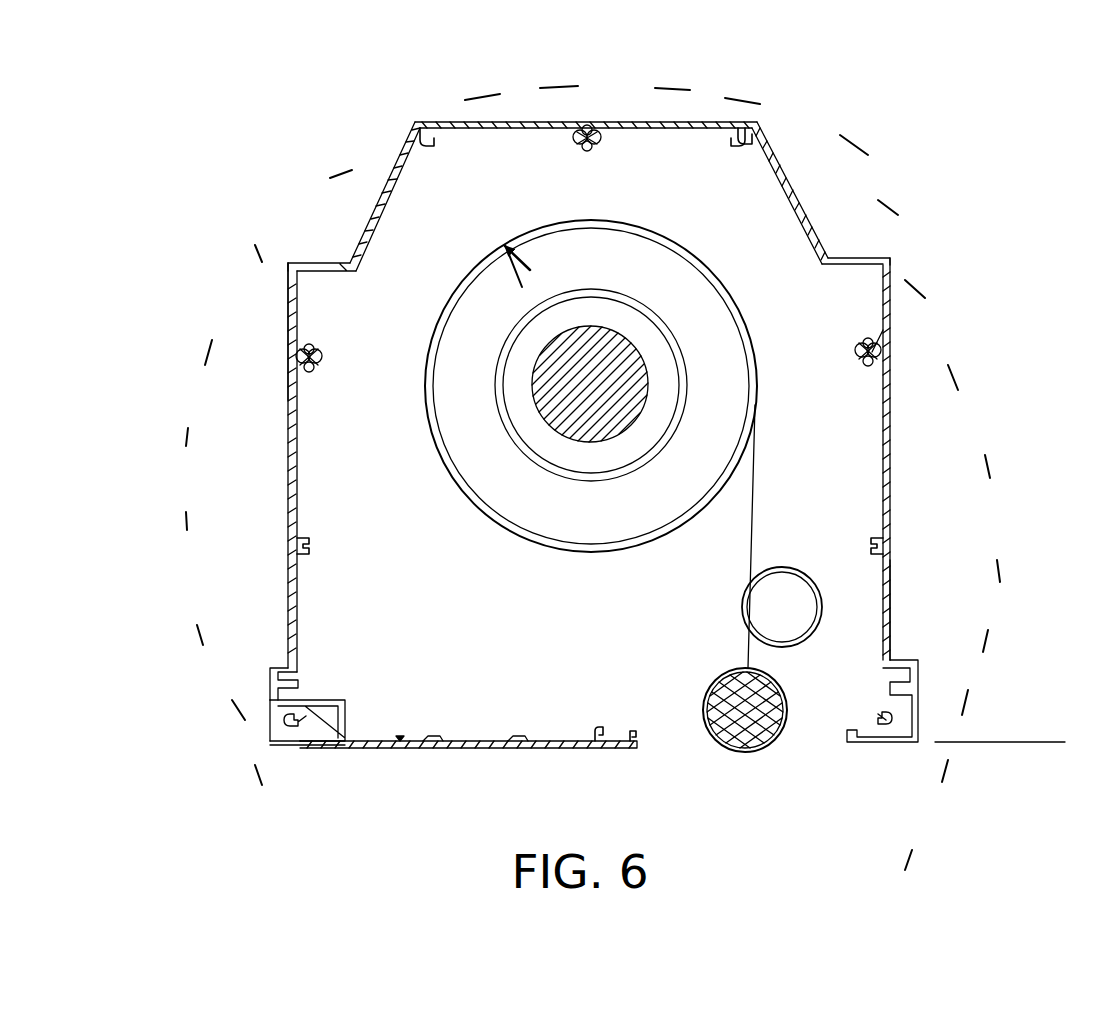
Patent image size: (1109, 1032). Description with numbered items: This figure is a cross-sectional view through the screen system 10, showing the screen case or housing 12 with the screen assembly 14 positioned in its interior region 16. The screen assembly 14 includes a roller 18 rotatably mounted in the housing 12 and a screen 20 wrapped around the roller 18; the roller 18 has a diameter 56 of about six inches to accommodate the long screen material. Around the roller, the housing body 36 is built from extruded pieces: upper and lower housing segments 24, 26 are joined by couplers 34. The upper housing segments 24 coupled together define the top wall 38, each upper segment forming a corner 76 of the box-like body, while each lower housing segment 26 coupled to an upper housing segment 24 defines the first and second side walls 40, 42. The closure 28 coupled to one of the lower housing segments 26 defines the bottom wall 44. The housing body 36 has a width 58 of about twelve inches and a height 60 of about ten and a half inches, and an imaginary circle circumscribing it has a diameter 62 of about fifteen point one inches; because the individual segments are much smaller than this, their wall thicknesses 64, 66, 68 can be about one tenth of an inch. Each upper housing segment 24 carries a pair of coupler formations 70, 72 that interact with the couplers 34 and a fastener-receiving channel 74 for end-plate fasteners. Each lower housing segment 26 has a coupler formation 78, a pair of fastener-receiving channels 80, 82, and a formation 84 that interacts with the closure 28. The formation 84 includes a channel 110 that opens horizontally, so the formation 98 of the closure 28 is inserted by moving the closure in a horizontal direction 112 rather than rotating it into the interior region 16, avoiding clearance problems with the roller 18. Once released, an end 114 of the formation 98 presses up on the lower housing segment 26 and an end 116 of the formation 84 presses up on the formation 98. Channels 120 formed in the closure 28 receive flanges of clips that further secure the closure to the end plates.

The screen system 10 is at (915, 160).
The screen case or housing 12 is at (903, 432).
The screen assembly 14 is at (525, 595).
The interior region 16 is at (862, 302).
The roller 18 is at (700, 542).
The screen 20 is at (540, 552).
The upper housing segments 24 is at (390, 195).
The lower housing segments 26 is at (892, 492).
The closure 28 is at (492, 748).
The couplers 34 is at (880, 355).
The housing body 36 is at (808, 185).
The top wall 38 is at (668, 122).
The first side wall 40 is at (300, 462).
The second side wall 42 is at (893, 600).
The bottom wall 44 is at (540, 741).
The diameter of roller 56 is at (530, 268).
The width of housing body 58 is at (270, 765).
The height of housing body 60 is at (1045, 130).
The diameter of circumscribing circle 62 is at (185, 517).
The wall thickness of upper housing segments 64 is at (378, 248).
The wall thickness of lower housing segments 66 is at (292, 406).
The wall thickness of closure 68 is at (400, 792).
The coupler formation 70 is at (565, 150).
The coupler formation 72 is at (320, 345).
The fastener-receiving channel 74 is at (740, 150).
The corner 76 is at (810, 108).
The coupler formation 78 is at (300, 407).
The fastener-receiving channel 80 is at (330, 548).
The fastener-receiving channel 82 is at (882, 722).
The formation 84 is at (232, 702).
The formation 98 is at (332, 700).
The channel 110 is at (328, 720).
The horizontal direction 112 is at (600, 690).
The end of formation 114 is at (298, 680).
The end of formation 116 is at (333, 750).
The channels 120 is at (618, 735).